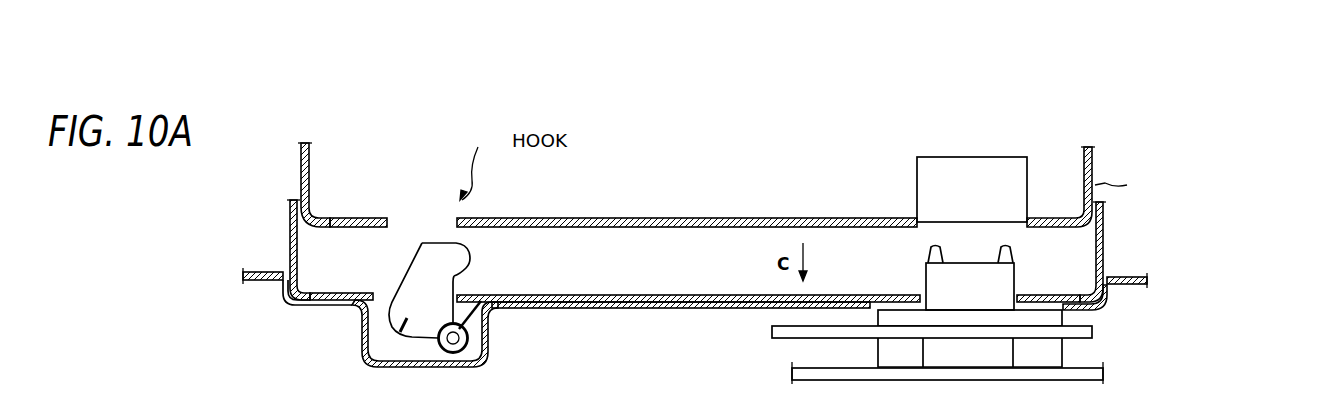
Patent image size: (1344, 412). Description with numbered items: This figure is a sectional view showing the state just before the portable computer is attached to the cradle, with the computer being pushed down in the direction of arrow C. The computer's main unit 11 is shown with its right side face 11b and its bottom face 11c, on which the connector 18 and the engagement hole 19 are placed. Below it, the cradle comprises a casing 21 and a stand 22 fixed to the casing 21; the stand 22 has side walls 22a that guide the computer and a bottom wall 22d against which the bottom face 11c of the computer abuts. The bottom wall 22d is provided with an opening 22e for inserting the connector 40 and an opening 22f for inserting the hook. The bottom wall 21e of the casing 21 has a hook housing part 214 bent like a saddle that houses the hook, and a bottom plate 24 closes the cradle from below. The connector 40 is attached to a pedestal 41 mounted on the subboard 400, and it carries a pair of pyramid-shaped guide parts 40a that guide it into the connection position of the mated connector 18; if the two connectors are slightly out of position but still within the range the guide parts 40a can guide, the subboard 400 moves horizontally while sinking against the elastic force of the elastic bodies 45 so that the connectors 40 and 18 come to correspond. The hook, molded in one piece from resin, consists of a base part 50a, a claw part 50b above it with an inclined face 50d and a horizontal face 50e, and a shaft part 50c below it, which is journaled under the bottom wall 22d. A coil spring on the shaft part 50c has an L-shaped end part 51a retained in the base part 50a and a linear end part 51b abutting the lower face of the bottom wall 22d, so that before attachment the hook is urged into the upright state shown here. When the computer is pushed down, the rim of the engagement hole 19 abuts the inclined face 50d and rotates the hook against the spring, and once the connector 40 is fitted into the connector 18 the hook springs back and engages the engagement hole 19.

The main unit 11 is at (1100, 168).
The right side face 11b is at (301, 192).
The bottom face 11c is at (638, 228).
The connector 18 is at (923, 177).
The engagement hole 19 is at (388, 216).
The casing 21 is at (1108, 293).
The bottom wall 21e is at (595, 309).
The hook housing part 214 is at (483, 360).
The stand 22 is at (1107, 243).
The side walls 22a is at (290, 240).
The bottom wall 22d is at (570, 296).
The opening 22e is at (1017, 297).
The opening 22f is at (375, 297).
The bottom plate 24 is at (1103, 375).
The connector 40 is at (968, 268).
The guide parts 40a is at (928, 252).
The pedestal 41 is at (888, 321).
The elastic bodies 45 is at (1050, 352).
The subboard 400 is at (787, 332).
The base part 50a is at (387, 318).
The claw part 50b is at (452, 257).
The shaft part 50c is at (455, 350).
The inclined face 50d is at (463, 245).
The horizontal face 50e is at (463, 275).
The L-shaped end part 51a is at (400, 331).
The linear end part 51b is at (490, 331).